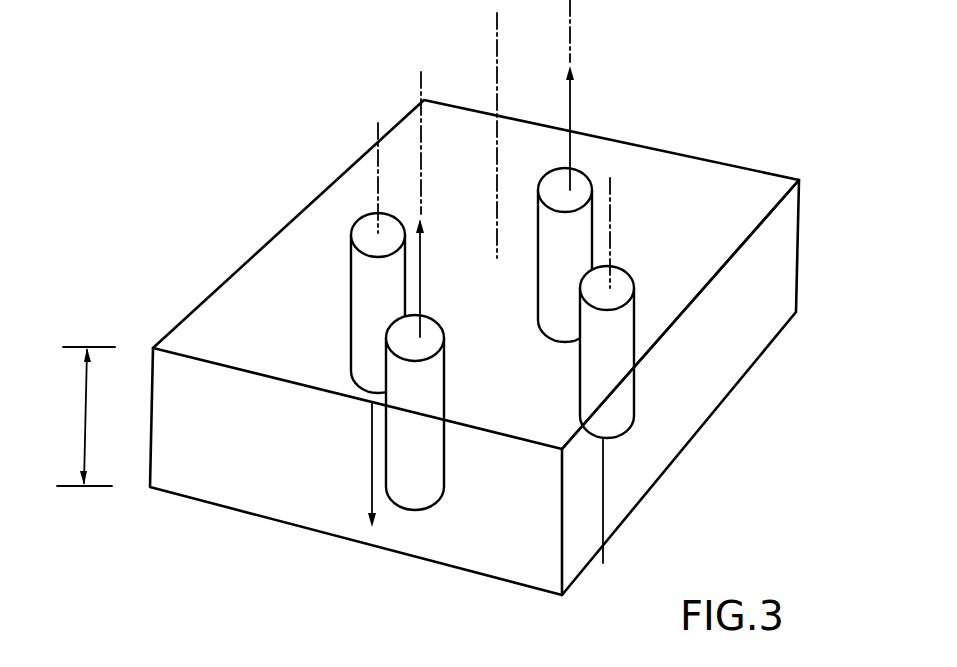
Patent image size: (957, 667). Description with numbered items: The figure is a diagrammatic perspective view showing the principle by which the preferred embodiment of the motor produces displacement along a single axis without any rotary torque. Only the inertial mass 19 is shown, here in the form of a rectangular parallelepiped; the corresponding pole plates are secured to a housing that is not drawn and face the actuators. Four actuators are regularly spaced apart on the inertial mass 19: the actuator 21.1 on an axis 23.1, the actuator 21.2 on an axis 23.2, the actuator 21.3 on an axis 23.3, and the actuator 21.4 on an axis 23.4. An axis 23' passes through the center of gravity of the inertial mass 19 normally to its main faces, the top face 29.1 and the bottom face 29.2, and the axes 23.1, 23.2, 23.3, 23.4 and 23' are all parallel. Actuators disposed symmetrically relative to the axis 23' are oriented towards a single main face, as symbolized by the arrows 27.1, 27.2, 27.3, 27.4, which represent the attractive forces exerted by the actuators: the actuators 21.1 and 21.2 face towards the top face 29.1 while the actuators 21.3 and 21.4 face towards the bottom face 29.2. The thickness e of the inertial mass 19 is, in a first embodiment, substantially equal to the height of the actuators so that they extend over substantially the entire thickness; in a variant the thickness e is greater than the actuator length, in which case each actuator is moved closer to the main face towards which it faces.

The inertial mass 19 is at (490, 297).
The actuator 21.1 is at (383, 375).
The actuator 21.2 is at (590, 222).
The actuator 21.3 is at (632, 405).
The actuator 21.4 is at (350, 258).
The axis 23.1 is at (421, 80).
The axis 23.2 is at (572, 10).
The axis 23.3 is at (610, 240).
The axis 23.4 is at (378, 132).
The axis 23' is at (439, 135).
The arrow 27.1 is at (418, 298).
The arrow 27.2 is at (570, 112).
The arrow 27.3 is at (605, 497).
The arrow 27.4 is at (363, 460).
The top face 29.1 is at (710, 177).
The bottom face 29.2 is at (727, 397).
The thickness e is at (86, 416).